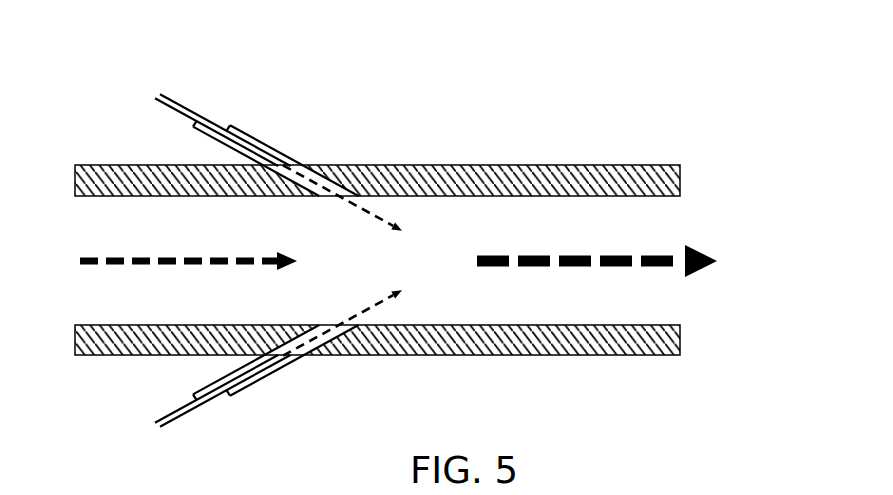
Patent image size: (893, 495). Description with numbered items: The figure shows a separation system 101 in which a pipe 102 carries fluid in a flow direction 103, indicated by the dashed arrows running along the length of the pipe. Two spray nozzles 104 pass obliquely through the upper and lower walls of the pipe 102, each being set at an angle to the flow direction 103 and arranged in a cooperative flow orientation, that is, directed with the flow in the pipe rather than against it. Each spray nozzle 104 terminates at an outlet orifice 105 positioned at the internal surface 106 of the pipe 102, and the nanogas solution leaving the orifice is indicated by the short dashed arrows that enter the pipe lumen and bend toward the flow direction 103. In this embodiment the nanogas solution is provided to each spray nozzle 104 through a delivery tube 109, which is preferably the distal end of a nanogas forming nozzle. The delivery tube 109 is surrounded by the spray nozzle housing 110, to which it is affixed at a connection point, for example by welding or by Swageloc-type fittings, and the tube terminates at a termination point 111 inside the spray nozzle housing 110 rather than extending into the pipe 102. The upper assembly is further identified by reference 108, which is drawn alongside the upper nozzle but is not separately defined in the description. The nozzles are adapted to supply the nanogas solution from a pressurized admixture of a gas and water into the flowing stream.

The separation system 101 is at (441, 102).
The pipe 102 is at (522, 157).
The flow direction 103 is at (403, 264).
The spray nozzle 104 is at (308, 374).
The outlet orifice 105 is at (188, 128).
The internal surface 106 is at (439, 316).
The upper injector tube 108 is at (202, 101).
The delivery tube 109 is at (320, 314).
The spray nozzle housing 110 is at (276, 132).
The delivery tube termination 111 is at (292, 156).